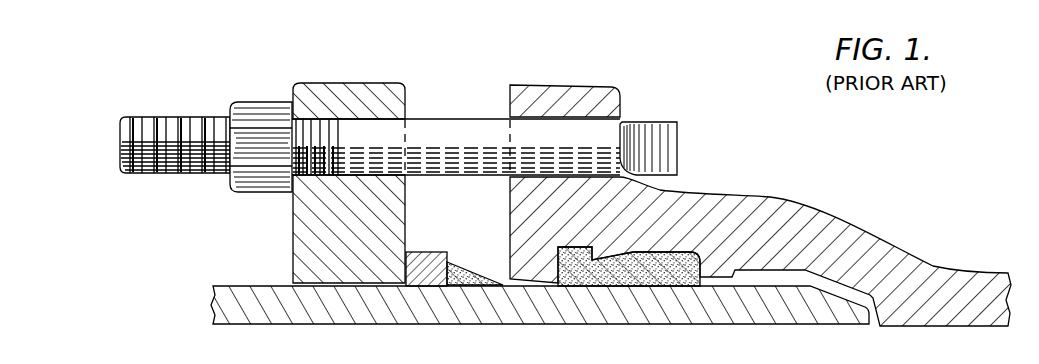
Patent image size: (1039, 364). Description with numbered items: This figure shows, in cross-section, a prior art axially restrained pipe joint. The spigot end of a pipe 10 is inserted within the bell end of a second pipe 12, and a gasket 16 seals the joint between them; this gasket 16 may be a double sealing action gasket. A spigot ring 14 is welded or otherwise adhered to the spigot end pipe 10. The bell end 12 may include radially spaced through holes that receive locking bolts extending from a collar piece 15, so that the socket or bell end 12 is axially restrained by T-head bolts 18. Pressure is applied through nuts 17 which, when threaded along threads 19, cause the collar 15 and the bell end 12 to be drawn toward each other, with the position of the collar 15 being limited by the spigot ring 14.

The pipe 10 is at (298, 310).
The pipe 12 is at (830, 232).
The spigot ring 14 is at (433, 252).
The collar piece 15 is at (308, 221).
The gasket 16 is at (597, 278).
The nuts 17 is at (257, 108).
The T-head bolts 18 is at (623, 127).
The threads 19 is at (155, 120).